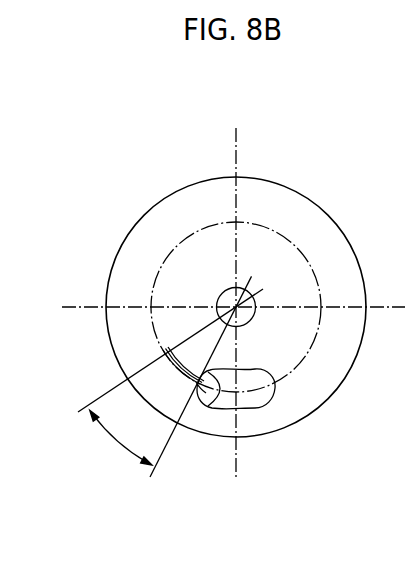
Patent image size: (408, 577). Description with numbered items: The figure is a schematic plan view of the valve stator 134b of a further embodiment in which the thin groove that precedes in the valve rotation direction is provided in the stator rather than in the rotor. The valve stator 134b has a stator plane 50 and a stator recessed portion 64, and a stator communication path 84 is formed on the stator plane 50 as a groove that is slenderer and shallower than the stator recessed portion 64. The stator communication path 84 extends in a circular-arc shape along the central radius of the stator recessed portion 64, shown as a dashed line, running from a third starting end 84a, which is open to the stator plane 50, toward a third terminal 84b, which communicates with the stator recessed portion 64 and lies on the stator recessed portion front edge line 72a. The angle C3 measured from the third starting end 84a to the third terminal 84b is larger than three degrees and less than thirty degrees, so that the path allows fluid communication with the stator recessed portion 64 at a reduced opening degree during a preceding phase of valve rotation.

The stator plane 50 is at (308, 215).
The stator recessed portion 64 is at (257, 398).
The stator recessed portion front edge line 72a is at (222, 397).
The stator communication path 84 is at (172, 376).
The third starting end 84a is at (163, 350).
The third terminal 84b is at (206, 393).
The angle C3 is at (113, 440).
The valve stator 134b is at (260, 566).